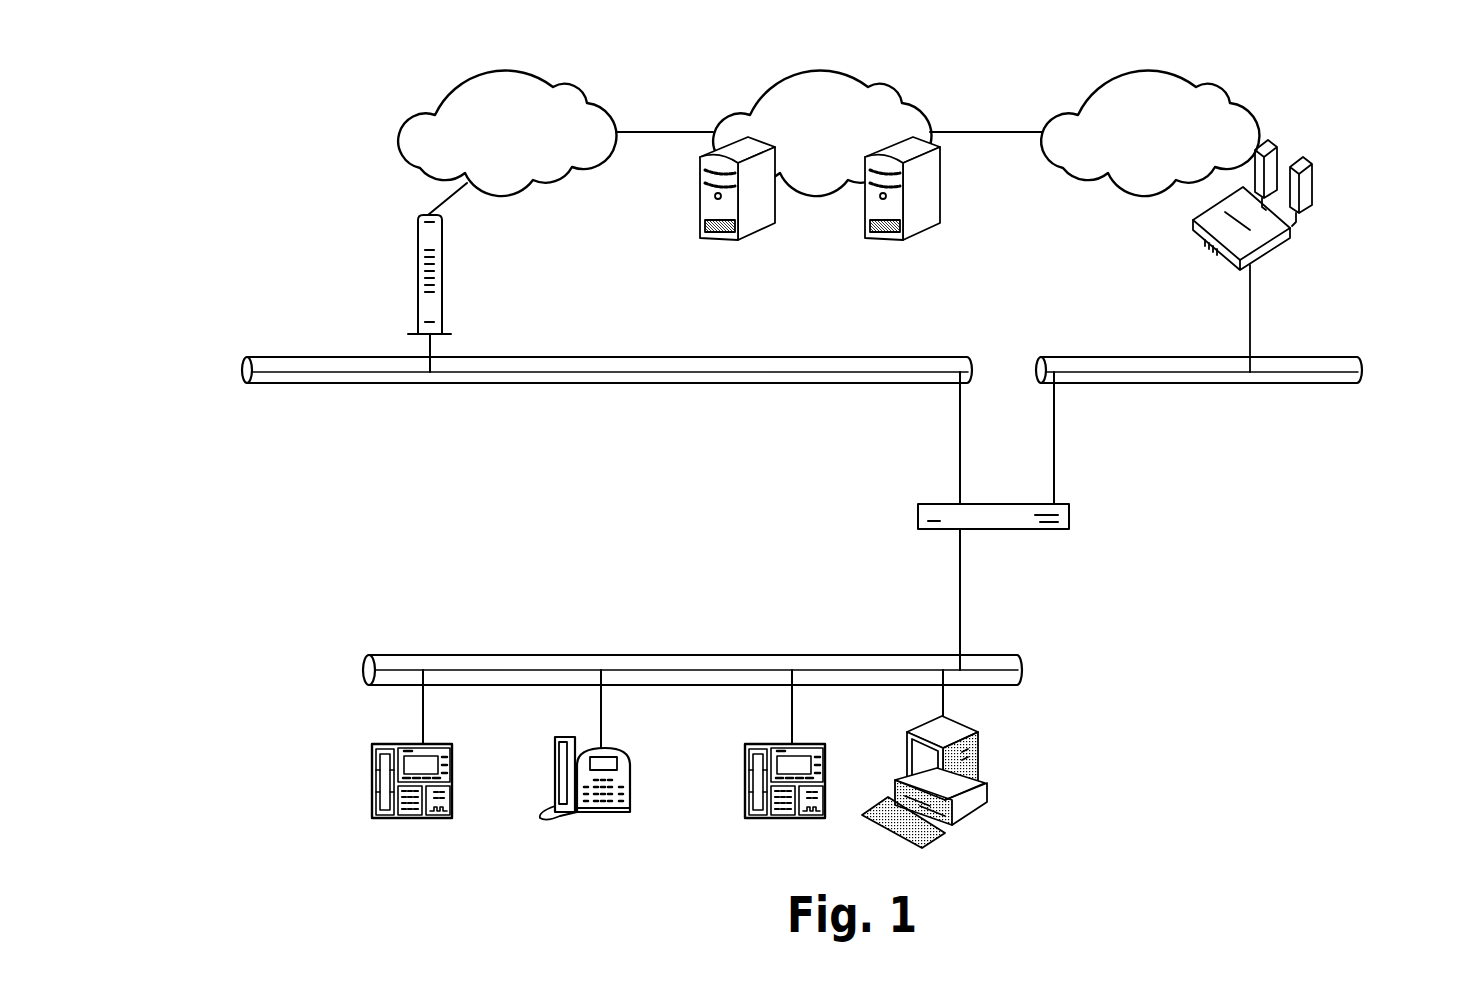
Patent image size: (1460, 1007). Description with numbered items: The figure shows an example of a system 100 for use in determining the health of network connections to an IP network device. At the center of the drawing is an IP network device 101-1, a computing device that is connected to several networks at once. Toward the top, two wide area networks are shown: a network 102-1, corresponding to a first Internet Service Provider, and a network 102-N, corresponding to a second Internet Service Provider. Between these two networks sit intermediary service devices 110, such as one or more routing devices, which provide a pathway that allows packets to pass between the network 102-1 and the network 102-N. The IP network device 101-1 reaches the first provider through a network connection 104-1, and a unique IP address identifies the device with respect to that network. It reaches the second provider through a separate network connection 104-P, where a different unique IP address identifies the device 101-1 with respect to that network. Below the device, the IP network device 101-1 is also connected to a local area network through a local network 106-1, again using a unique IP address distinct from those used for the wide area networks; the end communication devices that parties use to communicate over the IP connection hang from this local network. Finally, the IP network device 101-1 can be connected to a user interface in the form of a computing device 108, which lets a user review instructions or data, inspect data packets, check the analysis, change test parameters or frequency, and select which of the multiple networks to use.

The system 100 is at (220, 95).
The network 102-1 is at (385, 160).
The network 102-N is at (1270, 122).
The intermediary service devices 110 is at (940, 108).
The network connection 104-1 is at (238, 372).
The network connection 104-P is at (1370, 365).
The IP network device 101-1 is at (1087, 522).
The local network 106-1 is at (335, 668).
The computing device 108 is at (1005, 773).